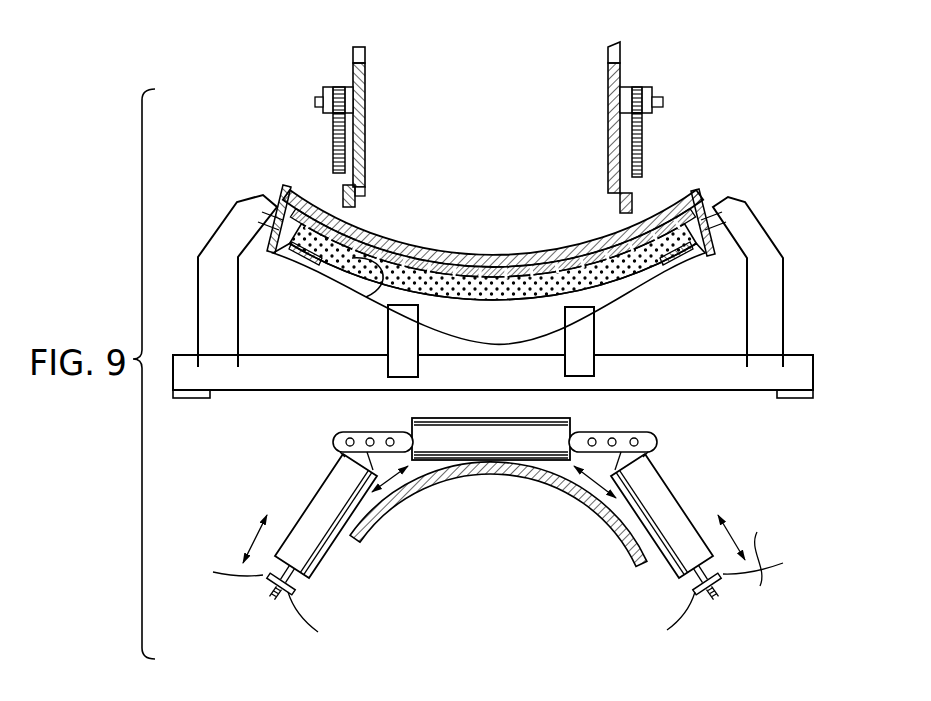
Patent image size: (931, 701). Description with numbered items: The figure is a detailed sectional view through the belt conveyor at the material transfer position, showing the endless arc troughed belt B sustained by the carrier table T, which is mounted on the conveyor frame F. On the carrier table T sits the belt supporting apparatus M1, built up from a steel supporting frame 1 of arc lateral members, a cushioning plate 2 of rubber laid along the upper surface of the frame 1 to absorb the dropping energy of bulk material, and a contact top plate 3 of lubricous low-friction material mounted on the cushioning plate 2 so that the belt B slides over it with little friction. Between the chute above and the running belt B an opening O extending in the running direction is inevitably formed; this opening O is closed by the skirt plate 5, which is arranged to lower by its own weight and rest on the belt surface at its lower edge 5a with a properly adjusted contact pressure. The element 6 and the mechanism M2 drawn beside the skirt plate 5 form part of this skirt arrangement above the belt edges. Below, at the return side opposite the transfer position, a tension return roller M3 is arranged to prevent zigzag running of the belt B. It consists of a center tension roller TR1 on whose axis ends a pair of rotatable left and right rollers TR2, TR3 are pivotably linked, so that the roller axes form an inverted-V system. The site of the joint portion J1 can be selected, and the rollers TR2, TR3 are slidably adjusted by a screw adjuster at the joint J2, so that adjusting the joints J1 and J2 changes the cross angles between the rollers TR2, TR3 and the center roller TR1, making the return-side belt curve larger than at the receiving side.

The supporting frame 1 is at (642, 287).
The cushioning plate 2 is at (347, 253).
The contact top plate 3 is at (370, 297).
The skirt plate 5 is at (346, 135).
The lower edge 5a is at (343, 194).
The bolt bracket 6 is at (333, 126).
The belt B is at (573, 237).
The opening O is at (363, 203).
The belt supporting apparatus M1 is at (477, 248).
The height adjusting mechanism M2 is at (596, 131).
The tension return roller M3 is at (681, 472).
The carrier table T is at (773, 313).
The joint portion J1 is at (360, 430).
The joint J2 is at (303, 589).
The center tension roller TR1 is at (512, 437).
The left roller TR2 is at (333, 513).
The right roller TR3 is at (637, 533).
The conveyor frame F is at (482, 550).